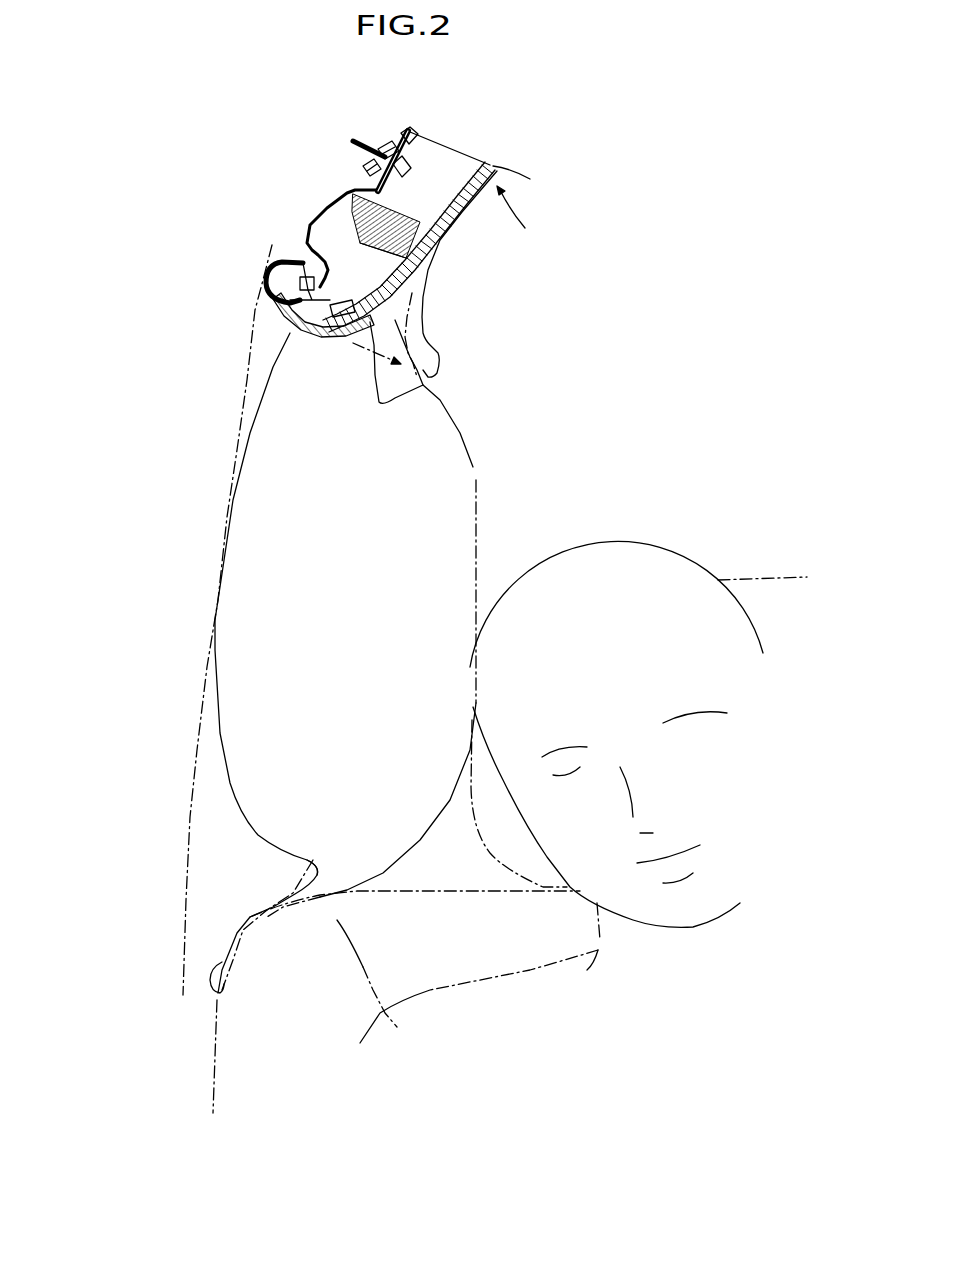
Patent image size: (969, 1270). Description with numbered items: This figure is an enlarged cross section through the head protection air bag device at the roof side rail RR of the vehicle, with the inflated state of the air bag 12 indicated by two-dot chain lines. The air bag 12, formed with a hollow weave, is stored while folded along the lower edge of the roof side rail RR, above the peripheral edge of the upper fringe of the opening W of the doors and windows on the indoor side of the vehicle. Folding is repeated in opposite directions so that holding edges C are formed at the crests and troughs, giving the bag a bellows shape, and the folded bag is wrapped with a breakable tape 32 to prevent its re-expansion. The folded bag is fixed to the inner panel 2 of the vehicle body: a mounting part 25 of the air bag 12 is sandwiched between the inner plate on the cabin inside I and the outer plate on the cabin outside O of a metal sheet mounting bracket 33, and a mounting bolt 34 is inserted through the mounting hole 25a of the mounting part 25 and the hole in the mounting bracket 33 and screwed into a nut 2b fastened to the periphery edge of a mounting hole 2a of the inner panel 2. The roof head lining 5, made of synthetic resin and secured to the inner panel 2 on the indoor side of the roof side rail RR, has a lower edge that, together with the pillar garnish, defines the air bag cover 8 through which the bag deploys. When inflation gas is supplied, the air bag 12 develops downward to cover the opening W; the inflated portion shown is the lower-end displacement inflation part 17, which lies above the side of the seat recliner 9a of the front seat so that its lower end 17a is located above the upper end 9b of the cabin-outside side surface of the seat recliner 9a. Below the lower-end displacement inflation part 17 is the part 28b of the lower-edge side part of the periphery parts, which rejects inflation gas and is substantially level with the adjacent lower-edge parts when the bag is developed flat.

The inner panel 2 is at (342, 200).
The mounting hole 2a is at (382, 142).
The nut 2b is at (365, 168).
The roof head lining 5 is at (459, 194).
The air bag cover 8 is at (425, 319).
The seat recliner 9a is at (230, 1030).
The upper end 9b is at (390, 1015).
The air bag 12 is at (392, 210).
The lower-end displacement inflation part 17 is at (250, 520).
The lower end 17a is at (347, 863).
The mounting part 25 is at (416, 135).
The mounting hole 25a is at (410, 164).
The part of lower-edge side part 28b is at (217, 962).
The tape 32 is at (360, 242).
The mounting bracket 33 is at (423, 147).
The mounting bolt 34 is at (352, 140).
The holding edge C is at (346, 218).
The roof side rail RR is at (527, 217).
The opening W is at (253, 381).
The cabin inside I is at (638, 708).
The cabin outside O is at (151, 733).